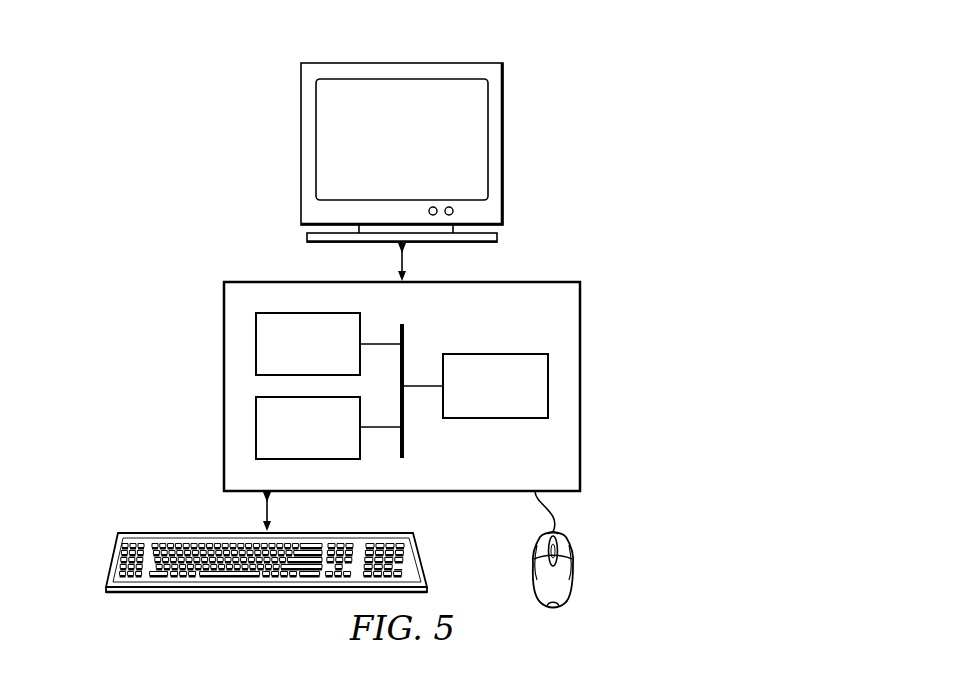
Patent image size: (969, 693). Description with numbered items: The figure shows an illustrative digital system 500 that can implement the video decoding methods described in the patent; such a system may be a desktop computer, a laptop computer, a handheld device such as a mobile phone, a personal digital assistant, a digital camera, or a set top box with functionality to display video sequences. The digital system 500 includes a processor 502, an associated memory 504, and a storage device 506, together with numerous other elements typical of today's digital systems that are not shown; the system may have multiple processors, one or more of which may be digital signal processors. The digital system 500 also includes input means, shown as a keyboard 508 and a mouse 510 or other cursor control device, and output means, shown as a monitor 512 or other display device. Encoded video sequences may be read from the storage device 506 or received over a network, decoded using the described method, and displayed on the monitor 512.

The digital system 500 is at (590, 116).
The processor 502 is at (515, 399).
The memory 504 is at (327, 357).
The storage device 506 is at (327, 440).
The keyboard 508 is at (111, 557).
The mouse 510 is at (572, 572).
The monitor 512 is at (301, 147).